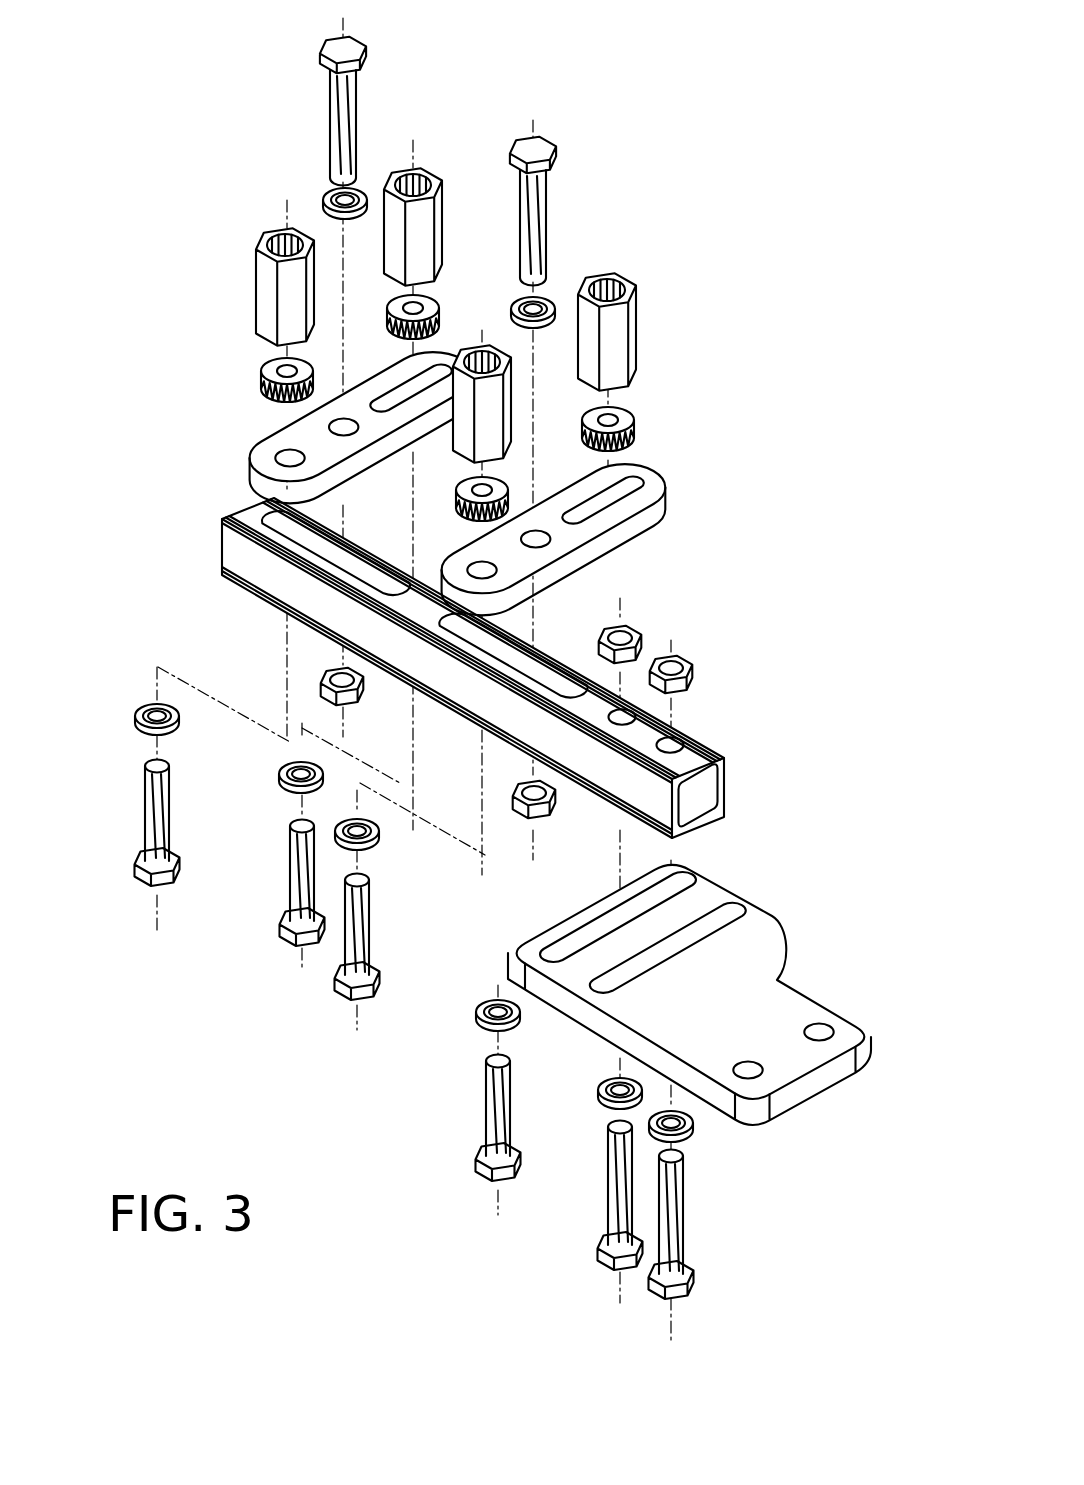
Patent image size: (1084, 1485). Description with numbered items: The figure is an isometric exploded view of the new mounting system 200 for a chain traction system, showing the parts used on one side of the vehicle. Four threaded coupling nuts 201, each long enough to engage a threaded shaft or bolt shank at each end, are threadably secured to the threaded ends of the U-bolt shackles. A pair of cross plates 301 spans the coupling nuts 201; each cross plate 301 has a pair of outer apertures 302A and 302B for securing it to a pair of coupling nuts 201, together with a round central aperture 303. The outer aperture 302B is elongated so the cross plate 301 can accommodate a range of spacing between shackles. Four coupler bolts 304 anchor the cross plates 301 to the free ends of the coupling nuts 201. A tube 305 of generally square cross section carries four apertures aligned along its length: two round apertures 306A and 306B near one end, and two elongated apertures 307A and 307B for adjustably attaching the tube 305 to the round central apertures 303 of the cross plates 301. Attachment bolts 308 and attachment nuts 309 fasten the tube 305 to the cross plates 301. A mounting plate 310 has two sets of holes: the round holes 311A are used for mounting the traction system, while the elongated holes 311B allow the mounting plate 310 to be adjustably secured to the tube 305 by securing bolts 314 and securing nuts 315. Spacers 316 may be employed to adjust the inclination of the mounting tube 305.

The mounting system 200 is at (812, 342).
The threaded coupling nut 201 is at (270, 287).
The cross plate 301 is at (258, 453).
The outer aperture 302A is at (276, 461).
The elongated outer aperture 302B is at (648, 505).
The round central aperture 303 is at (556, 549).
The coupler bolt 304 is at (478, 1157).
The tube 305 is at (708, 790).
The round aperture 306A is at (694, 746).
The round aperture 306B is at (648, 712).
The elongated aperture 307A is at (447, 615).
The elongated aperture 307B is at (264, 517).
The attachment bolt 308 is at (532, 137).
The attachment nut 309 is at (348, 703).
The mounting plate 310 is at (773, 982).
The round hole 311A is at (759, 1058).
The elongated hole 311B is at (684, 884).
The securing bolt 314 is at (653, 1288).
The securing nut 315 is at (636, 636).
The spacer 316 is at (262, 373).